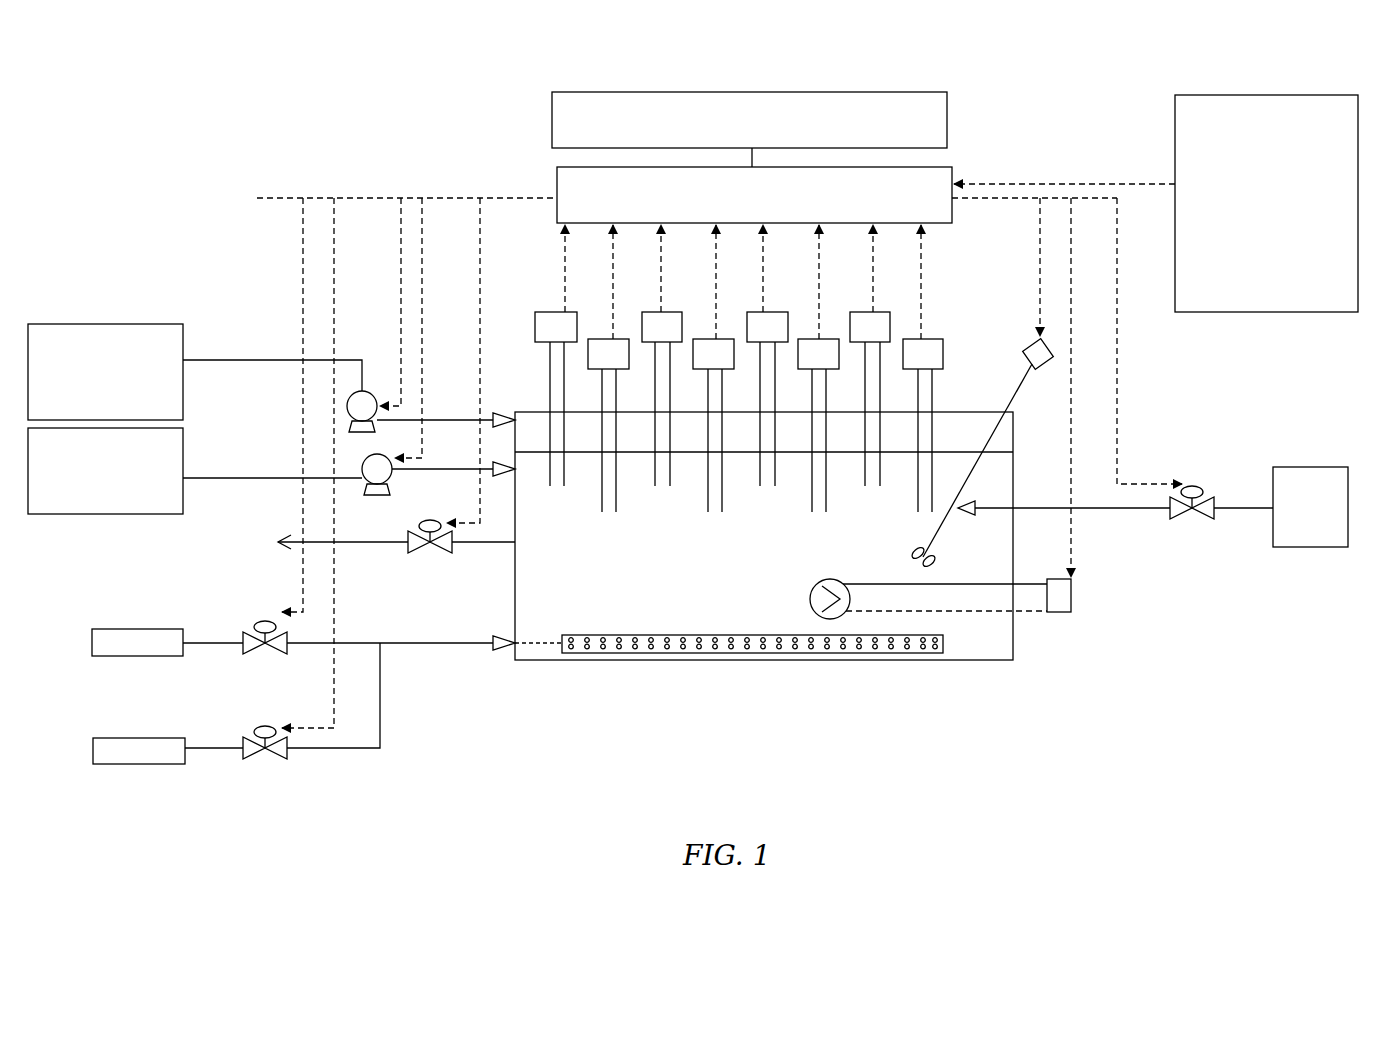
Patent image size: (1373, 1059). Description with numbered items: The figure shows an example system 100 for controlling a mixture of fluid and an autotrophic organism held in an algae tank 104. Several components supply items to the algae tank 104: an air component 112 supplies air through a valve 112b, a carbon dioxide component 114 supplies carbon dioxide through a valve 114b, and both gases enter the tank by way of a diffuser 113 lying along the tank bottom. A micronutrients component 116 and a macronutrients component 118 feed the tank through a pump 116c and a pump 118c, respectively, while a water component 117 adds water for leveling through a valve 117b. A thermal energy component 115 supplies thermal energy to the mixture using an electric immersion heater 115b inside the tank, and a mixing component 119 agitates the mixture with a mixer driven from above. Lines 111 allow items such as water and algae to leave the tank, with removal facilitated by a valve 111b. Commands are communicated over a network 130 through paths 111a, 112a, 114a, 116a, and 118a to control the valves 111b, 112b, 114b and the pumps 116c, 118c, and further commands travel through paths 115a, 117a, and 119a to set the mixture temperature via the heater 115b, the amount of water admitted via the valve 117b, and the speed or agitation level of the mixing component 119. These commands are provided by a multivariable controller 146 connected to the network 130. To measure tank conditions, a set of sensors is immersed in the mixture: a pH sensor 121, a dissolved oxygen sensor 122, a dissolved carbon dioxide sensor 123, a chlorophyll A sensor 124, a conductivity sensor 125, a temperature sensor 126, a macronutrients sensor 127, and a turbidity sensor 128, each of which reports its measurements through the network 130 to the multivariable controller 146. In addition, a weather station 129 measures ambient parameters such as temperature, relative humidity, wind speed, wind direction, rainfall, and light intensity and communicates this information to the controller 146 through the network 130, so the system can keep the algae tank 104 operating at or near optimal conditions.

The system 100 is at (987, 722).
The algae tank 104 is at (558, 669).
The lines 111 is at (396, 573).
The path 111a is at (480, 215).
The valve 111b is at (418, 558).
The air component 112 is at (135, 764).
The path 112a is at (334, 213).
The valve 112b is at (240, 765).
The diffuser 113 is at (885, 648).
The carbon dioxide component 114 is at (113, 656).
The path 114a is at (303, 230).
The valve 114b is at (240, 658).
The thermal energy component 115 is at (1057, 603).
The path 115a is at (1073, 240).
The electric immersion heater 115b is at (810, 590).
The micronutrients component 116 is at (113, 514).
The path 116a is at (422, 230).
The pump 116c is at (362, 465).
The water component 117 is at (1325, 540).
The path 117a is at (1117, 390).
The valve 117b is at (1190, 523).
The macronutrients component 118 is at (105, 324).
The path 118a is at (401, 262).
The pump 118c is at (347, 402).
The mixing component 119 is at (1028, 345).
The path 119a is at (1040, 285).
The pH sensor 121 is at (556, 355).
The dissolved oxygen sensor 122 is at (608, 368).
The dissolved carbon dioxide sensor 123 is at (667, 355).
The chlorophyll A sensor 124 is at (713, 368).
The conductivity sensor 125 is at (768, 355).
The temperature sensor 126 is at (819, 368).
The macronutrients sensor 127 is at (870, 355).
The turbidity sensor 128 is at (923, 368).
The weather station 129 is at (1156, 203).
The network 130 is at (557, 192).
The multivariable controller 146 is at (552, 120).